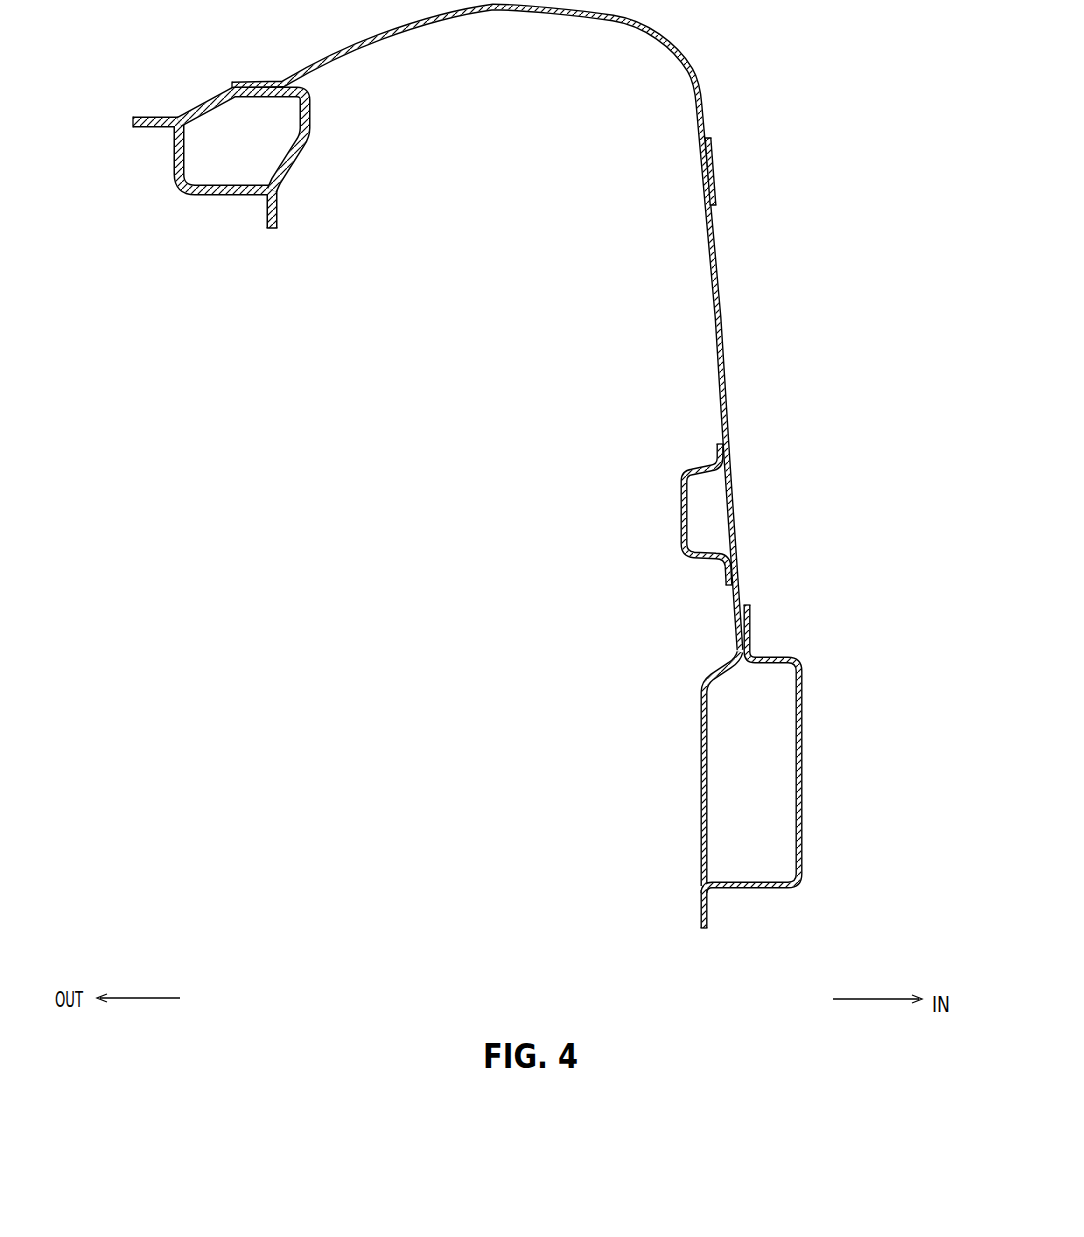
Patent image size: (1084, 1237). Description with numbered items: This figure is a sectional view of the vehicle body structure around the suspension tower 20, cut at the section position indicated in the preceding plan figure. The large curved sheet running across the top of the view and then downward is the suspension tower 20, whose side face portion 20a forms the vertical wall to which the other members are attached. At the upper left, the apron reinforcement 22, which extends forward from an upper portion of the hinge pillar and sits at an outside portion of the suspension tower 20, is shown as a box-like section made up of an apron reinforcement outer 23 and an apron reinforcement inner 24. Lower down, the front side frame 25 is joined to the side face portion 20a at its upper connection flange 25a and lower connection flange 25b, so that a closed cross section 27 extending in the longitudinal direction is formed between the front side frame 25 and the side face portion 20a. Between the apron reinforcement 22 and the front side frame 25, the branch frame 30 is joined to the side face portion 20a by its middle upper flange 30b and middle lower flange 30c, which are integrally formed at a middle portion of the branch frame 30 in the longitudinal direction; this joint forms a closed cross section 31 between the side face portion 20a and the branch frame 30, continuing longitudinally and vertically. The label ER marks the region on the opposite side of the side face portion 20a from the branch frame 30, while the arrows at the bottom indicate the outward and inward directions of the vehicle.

The suspension tower 20 is at (711, 108).
The side face portion 20a is at (722, 280).
The apron reinforcement 22 is at (249, 185).
The apron reinforcement outer 23 is at (185, 182).
The apron reinforcement inner 24 is at (308, 123).
The front side frame 25 is at (809, 786).
The upper connection flange 25a is at (750, 620).
The lower connection flange 25b is at (712, 905).
The closed cross section 27 is at (764, 786).
The branch frame 30 is at (655, 523).
The middle upper flange 30b is at (718, 453).
The middle lower flange 30c is at (727, 573).
The closed cross section 31 is at (708, 520).
The engine room side ER is at (853, 521).